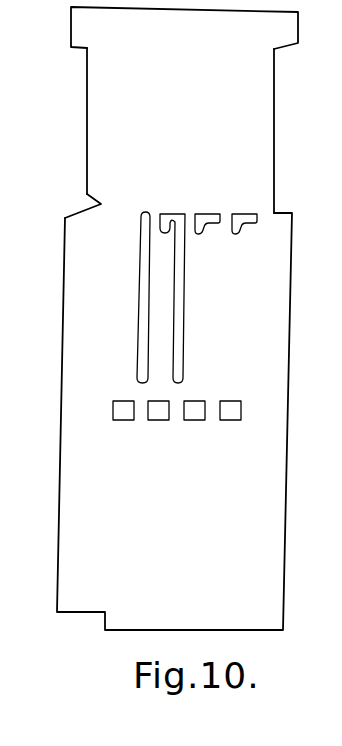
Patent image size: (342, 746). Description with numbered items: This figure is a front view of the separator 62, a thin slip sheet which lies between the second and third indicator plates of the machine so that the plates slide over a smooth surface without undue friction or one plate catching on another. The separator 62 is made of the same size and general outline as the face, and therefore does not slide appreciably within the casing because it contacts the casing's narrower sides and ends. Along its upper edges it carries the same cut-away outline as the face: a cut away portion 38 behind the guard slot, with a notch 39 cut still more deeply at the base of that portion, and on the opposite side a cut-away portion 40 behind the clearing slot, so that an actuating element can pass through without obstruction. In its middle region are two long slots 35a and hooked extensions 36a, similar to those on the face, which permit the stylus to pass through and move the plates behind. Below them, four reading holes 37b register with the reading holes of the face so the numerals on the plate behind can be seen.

The slots 35a is at (150, 286).
The hooked extensions 36a is at (238, 213).
The reading holes 37b is at (193, 412).
The cut away portion 38 is at (87, 110).
The notch 39 is at (100, 204).
The cut-away portion 40 is at (274, 113).
The separator 62 is at (273, 519).